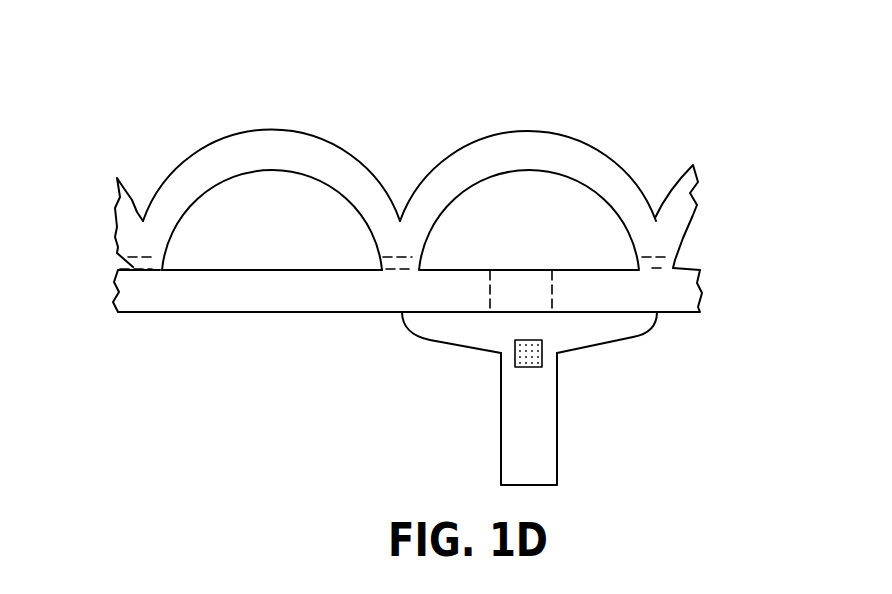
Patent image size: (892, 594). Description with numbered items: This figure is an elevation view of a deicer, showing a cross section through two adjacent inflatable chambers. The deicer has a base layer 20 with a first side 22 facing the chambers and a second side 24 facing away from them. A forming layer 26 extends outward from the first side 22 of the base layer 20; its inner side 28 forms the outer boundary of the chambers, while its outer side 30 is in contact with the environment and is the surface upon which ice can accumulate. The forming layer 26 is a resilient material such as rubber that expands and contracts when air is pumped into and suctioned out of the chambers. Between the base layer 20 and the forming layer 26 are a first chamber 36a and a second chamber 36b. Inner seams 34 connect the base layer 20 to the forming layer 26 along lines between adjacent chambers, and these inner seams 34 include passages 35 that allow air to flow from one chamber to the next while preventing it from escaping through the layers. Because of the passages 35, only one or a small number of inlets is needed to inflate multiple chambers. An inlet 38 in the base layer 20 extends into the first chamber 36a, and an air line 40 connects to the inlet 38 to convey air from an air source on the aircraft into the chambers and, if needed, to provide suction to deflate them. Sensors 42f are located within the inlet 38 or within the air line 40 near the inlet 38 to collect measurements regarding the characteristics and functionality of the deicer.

The base layer 20 is at (441, 268).
The first side 22 is at (212, 271).
The second side 24 is at (280, 312).
The forming layer 26 is at (560, 142).
The inner side 28 is at (190, 203).
The outer side 30 is at (272, 130).
The inner seams 34 is at (142, 220).
The passages 35 is at (143, 263).
The first chamber 36a is at (517, 240).
The second chamber 36b is at (245, 236).
The inlet 38 is at (530, 302).
The air line 40 is at (538, 463).
The sensors 42f is at (528, 367).